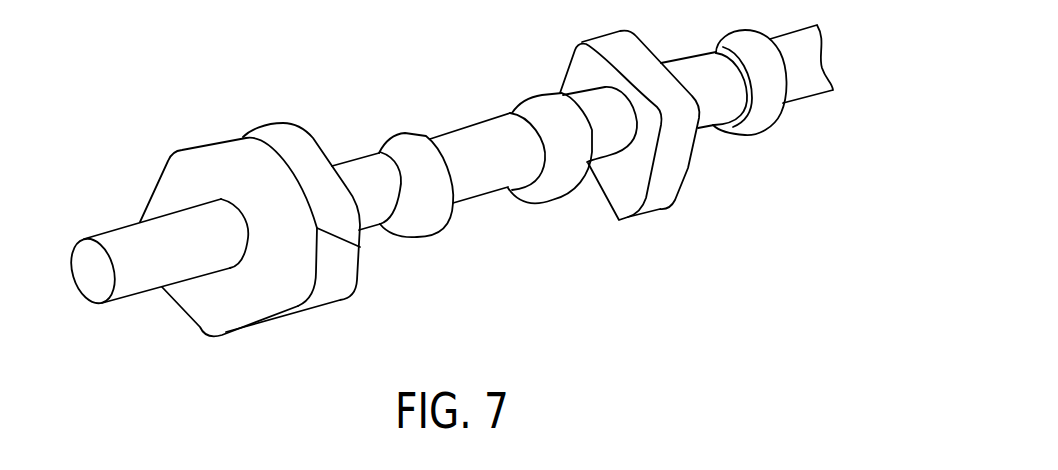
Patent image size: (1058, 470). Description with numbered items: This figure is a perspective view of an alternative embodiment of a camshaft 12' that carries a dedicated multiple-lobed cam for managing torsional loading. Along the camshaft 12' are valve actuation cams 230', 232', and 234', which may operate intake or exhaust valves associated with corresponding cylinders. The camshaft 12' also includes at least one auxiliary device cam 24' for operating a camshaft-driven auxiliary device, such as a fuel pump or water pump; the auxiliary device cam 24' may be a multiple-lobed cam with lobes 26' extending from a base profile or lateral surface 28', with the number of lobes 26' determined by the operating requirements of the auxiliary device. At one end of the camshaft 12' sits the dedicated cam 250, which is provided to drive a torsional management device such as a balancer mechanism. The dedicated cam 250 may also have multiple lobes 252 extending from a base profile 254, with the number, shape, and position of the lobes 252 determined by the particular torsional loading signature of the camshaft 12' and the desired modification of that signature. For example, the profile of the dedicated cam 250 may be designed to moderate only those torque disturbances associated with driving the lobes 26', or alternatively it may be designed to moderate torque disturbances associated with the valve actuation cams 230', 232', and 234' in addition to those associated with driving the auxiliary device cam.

The dedicated cam 250 is at (237, 152).
The lobes 252 is at (358, 247).
The base profile 254 is at (315, 270).
The camshaft 12' is at (487, 136).
The valve actuation cam 230' is at (427, 211).
The valve actuation cam 232' is at (550, 174).
The auxiliary device cam 24' is at (600, 166).
The base profile or lateral surface 28' is at (627, 147).
The lobes 26' is at (656, 124).
The valve actuation cam 234' is at (755, 102).